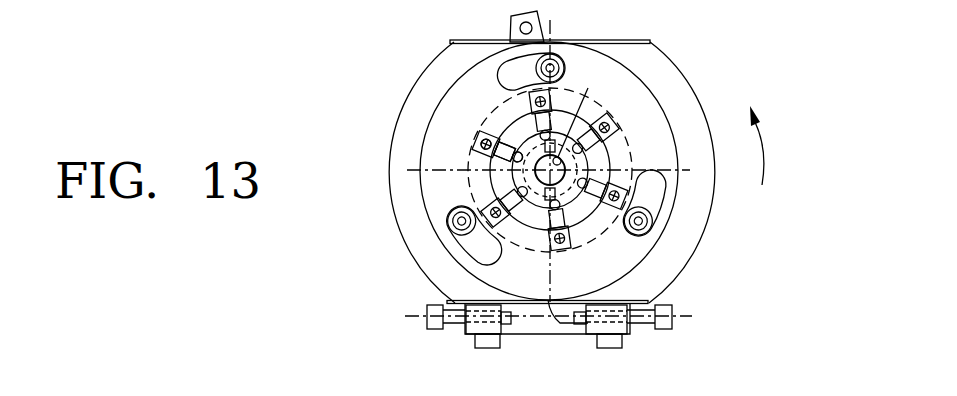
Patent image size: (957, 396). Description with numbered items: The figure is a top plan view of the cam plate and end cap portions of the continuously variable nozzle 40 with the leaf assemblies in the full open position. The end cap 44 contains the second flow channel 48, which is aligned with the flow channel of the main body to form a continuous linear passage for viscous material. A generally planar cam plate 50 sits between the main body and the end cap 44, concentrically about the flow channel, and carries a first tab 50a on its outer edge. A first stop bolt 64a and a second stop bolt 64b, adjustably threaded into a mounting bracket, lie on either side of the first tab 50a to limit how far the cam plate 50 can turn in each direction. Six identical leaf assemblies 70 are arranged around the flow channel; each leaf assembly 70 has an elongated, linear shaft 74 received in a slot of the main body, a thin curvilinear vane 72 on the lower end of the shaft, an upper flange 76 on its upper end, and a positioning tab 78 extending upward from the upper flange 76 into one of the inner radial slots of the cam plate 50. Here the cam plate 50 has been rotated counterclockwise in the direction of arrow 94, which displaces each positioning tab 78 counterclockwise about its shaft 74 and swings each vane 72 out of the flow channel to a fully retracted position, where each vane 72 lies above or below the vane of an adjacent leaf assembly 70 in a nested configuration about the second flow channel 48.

The continuously variable nozzle 40 is at (295, 43).
The end cap 44 is at (392, 222).
The second flow channel 48 is at (560, 155).
The cam plate 50 is at (435, 83).
The first tab 50a is at (562, 325).
The first stop bolt 64a is at (640, 330).
The second stop bolt 64b is at (458, 328).
The leaf assembly 70 is at (478, 118).
The vane 72 is at (542, 133).
The elongated, linear shaft 74 is at (470, 187).
The upper flange 76 is at (475, 152).
The positioning tab 78 is at (473, 137).
The direction arrow 94 is at (769, 154).